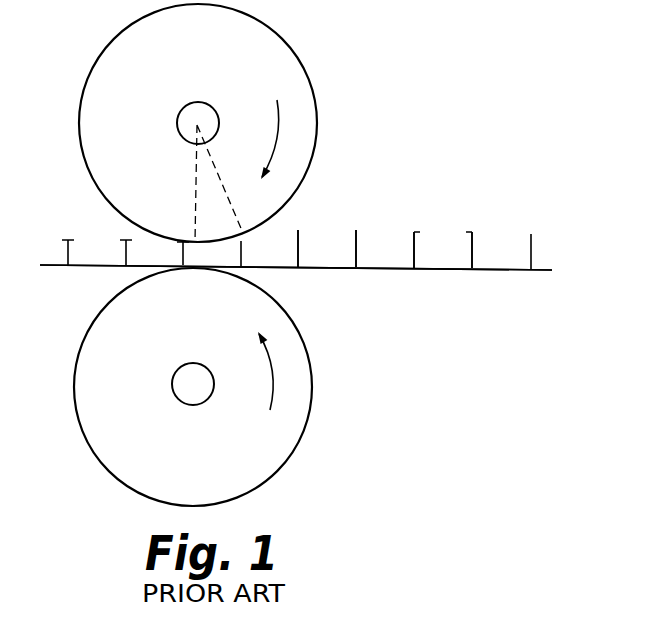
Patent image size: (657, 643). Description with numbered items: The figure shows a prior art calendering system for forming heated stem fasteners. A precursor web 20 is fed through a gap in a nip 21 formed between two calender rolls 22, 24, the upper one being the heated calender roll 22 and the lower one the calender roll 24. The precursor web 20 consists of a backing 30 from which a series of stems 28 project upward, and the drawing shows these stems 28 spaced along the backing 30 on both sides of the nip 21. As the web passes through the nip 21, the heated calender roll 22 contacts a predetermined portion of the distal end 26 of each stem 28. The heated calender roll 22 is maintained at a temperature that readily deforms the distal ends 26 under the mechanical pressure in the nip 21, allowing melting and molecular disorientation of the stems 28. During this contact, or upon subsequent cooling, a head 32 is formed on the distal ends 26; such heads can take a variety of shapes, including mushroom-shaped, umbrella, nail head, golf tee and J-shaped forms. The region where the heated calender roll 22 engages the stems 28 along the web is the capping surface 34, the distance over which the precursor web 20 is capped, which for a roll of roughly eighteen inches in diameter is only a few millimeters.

The precursor web 20 is at (449, 279).
The nip 21 is at (297, 210).
The heated calender roll 22 is at (96, 62).
The calender roll 24 is at (92, 323).
The distal end 26 is at (472, 232).
The stem 28 is at (298, 250).
The backing 30 is at (544, 270).
The head 32 is at (64, 240).
The capping surface 34 is at (216, 240).